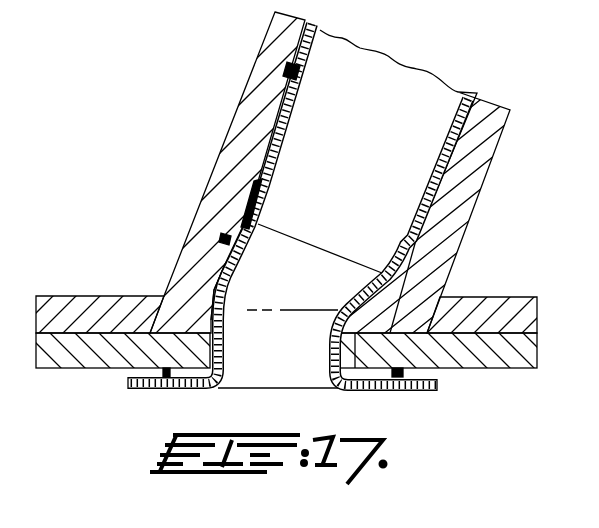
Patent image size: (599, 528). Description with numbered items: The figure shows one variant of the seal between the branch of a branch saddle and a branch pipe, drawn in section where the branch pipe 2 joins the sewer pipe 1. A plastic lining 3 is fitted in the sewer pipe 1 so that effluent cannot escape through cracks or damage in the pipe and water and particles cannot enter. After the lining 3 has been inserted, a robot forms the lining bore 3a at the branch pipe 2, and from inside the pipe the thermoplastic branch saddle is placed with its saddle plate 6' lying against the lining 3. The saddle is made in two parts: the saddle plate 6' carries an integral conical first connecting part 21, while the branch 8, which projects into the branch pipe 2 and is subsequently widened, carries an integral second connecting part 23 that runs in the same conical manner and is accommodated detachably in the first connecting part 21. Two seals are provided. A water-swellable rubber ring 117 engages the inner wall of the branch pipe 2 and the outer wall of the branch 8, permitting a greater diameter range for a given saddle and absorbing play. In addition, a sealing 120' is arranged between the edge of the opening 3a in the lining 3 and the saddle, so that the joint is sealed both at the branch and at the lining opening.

The sewer pipe 1 is at (473, 312).
The branch pipe 2 is at (480, 166).
The plastic lining 3 is at (487, 358).
The lining bore 3a is at (282, 377).
The saddle plate 6' is at (275, 399).
The branch 8 is at (287, 100).
The first connecting part 21 is at (224, 238).
The second connecting part 23 is at (262, 198).
The water-swellable rubber ring 117 is at (292, 70).
The sealing 120' is at (169, 268).